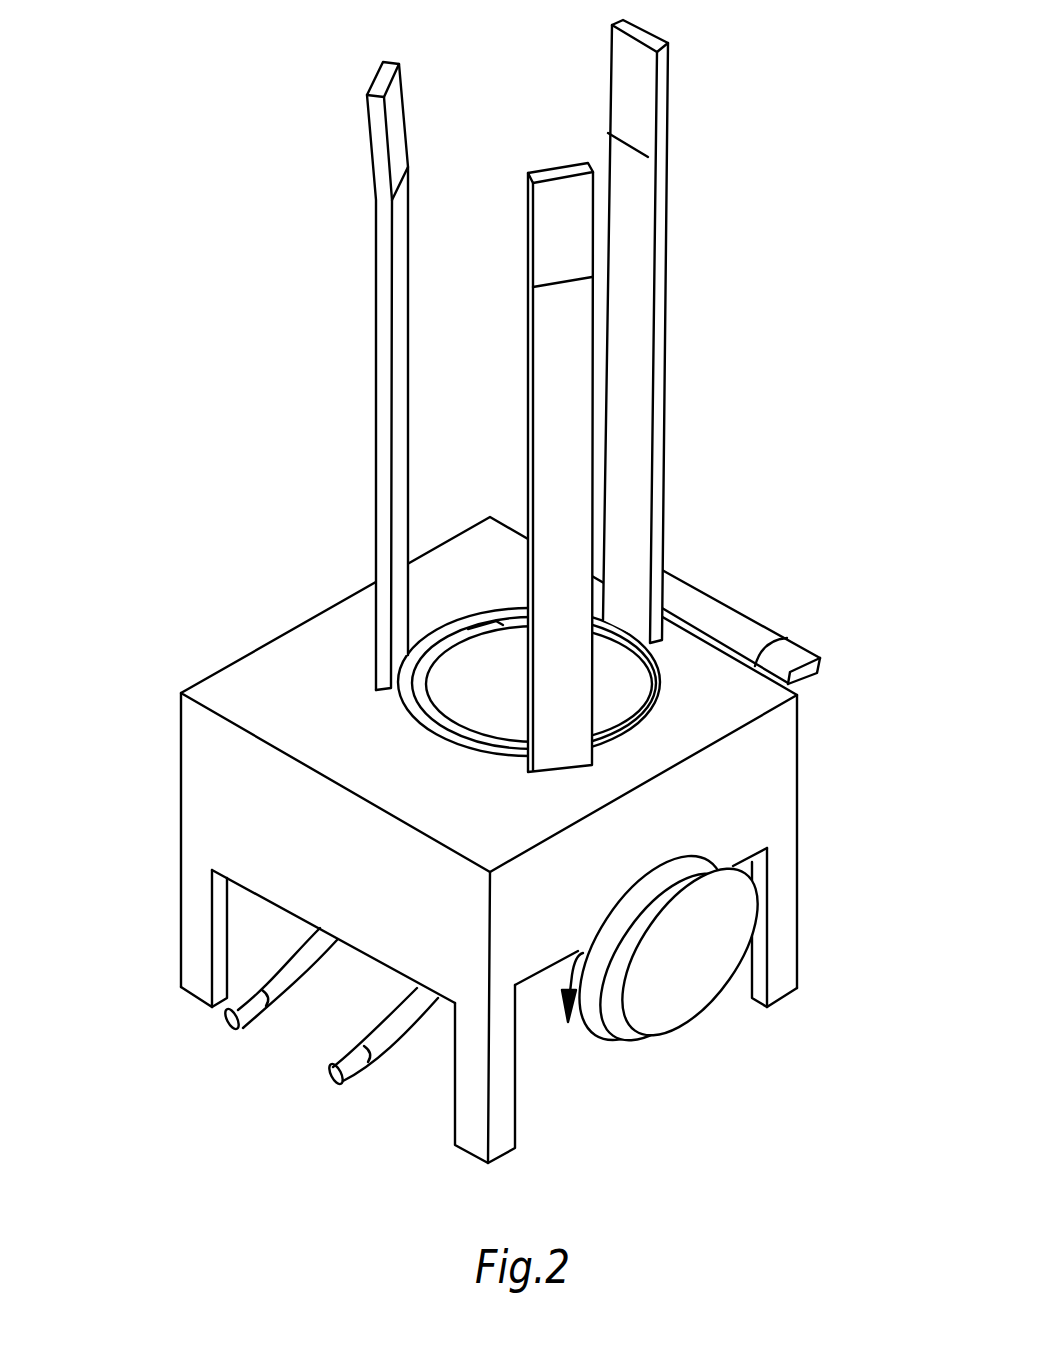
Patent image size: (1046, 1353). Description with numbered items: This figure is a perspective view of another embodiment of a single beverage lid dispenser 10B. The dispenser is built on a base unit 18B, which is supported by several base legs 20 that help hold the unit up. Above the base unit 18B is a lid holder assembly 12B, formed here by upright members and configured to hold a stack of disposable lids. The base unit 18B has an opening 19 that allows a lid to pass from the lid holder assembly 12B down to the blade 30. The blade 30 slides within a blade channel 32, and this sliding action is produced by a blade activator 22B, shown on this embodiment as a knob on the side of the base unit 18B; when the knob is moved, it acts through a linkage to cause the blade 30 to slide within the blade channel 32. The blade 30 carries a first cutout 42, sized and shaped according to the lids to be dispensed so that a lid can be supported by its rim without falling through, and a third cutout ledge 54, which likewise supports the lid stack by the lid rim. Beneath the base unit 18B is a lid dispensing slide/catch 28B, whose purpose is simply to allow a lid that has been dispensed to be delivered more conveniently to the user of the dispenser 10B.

The beverage lid dispenser 10B is at (489, 591).
The lid holder assembly 12B is at (377, 275).
The base unit 18B is at (220, 677).
The opening 19 is at (551, 677).
The base legs 20 is at (190, 968).
The blade activator 22B is at (670, 877).
The lid dispensing slide/catch 28B is at (407, 1007).
The blade 30 is at (755, 627).
The blade channel 32 is at (780, 641).
The first cutout 42 is at (487, 626).
The third cutout ledge 54 is at (440, 722).